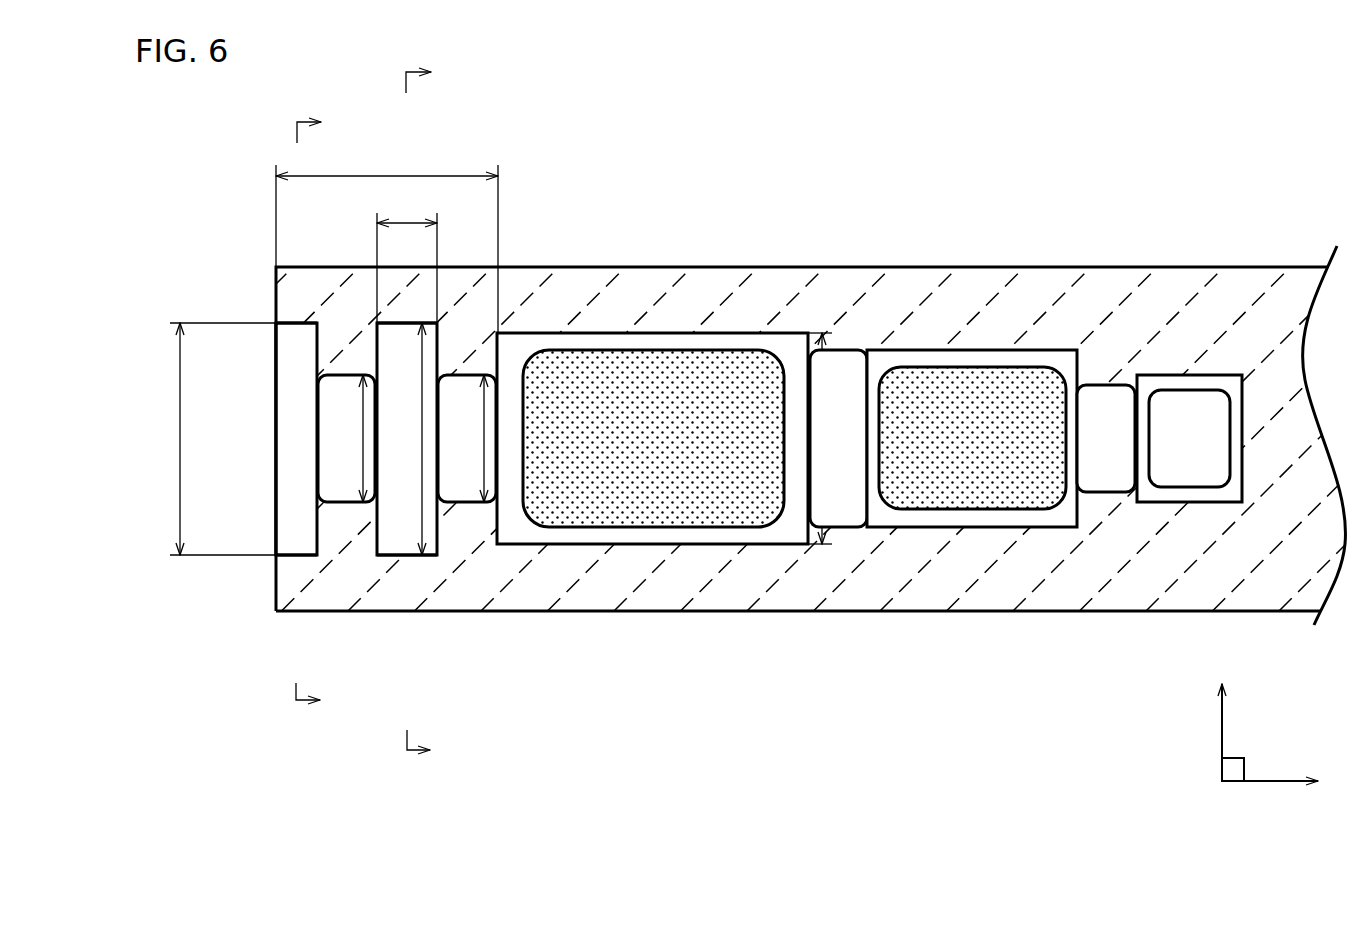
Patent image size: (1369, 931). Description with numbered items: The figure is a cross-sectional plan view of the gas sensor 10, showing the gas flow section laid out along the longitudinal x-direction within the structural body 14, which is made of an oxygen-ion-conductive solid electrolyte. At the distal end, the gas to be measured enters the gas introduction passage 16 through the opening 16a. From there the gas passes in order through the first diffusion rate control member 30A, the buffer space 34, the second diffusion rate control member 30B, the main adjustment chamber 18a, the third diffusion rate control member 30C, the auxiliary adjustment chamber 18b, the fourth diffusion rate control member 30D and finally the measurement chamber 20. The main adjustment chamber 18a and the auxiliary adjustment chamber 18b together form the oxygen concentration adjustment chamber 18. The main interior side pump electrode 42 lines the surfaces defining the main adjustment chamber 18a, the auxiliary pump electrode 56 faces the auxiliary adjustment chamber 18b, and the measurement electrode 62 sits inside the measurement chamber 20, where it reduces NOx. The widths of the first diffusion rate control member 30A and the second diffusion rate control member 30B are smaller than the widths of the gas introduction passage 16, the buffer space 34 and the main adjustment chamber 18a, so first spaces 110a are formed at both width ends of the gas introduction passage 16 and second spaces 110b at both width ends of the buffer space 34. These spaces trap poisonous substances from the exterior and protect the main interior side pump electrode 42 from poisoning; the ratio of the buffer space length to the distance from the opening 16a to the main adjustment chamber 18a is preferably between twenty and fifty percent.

The gas sensor 10 is at (580, 117).
The structural body 14 is at (1276, 260).
The gas introduction passage 16 is at (300, 398).
The opening 16a is at (276, 452).
The first spaces 110a is at (303, 353).
The second spaces 110b is at (392, 335).
The buffer space 34 is at (393, 523).
The first diffusion rate control member 30A is at (345, 490).
The second diffusion rate control member 30B is at (469, 488).
The third diffusion rate control member 30C is at (842, 510).
The fourth diffusion rate control member 30D is at (1105, 410).
The main interior side pump electrode 42 is at (660, 512).
The oxygen concentration adjustment chamber 18 is at (752, 210).
The main adjustment chamber 18a is at (757, 343).
The auxiliary adjustment chamber 18b is at (920, 362).
The auxiliary pump electrode 56 is at (988, 385).
The measurement electrode 62 is at (1175, 412).
The measurement chamber 20 is at (1220, 383).